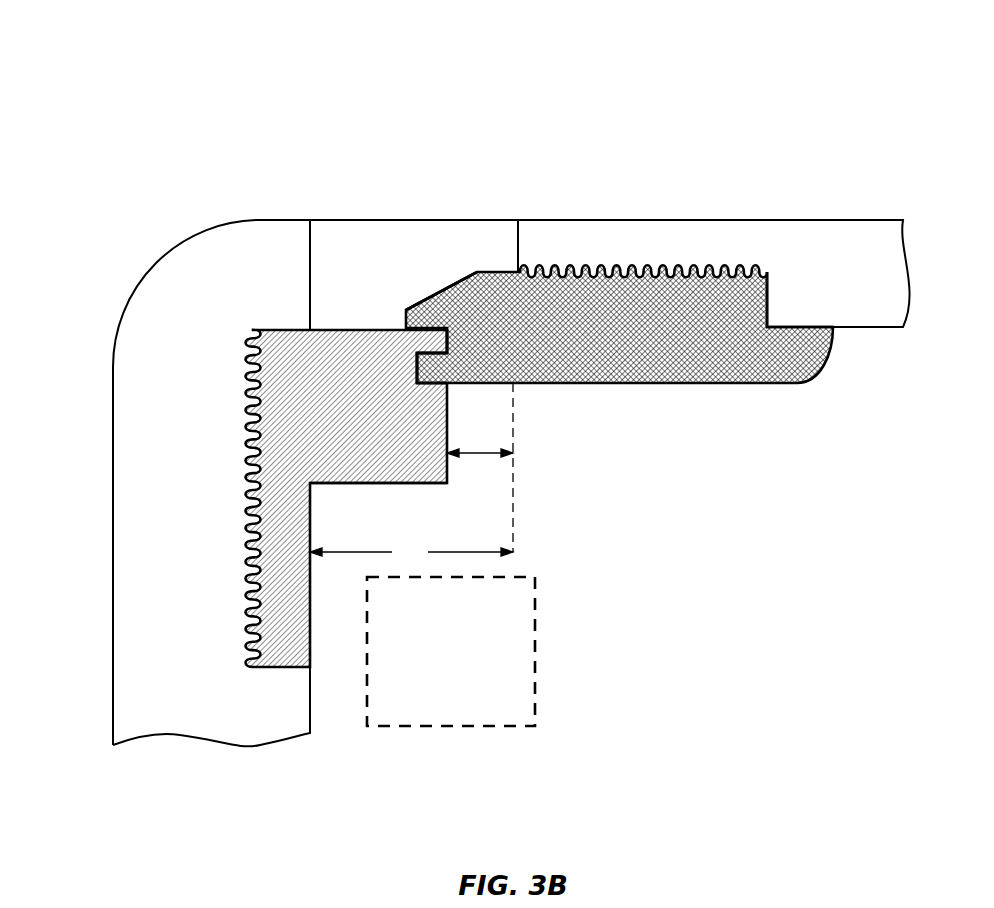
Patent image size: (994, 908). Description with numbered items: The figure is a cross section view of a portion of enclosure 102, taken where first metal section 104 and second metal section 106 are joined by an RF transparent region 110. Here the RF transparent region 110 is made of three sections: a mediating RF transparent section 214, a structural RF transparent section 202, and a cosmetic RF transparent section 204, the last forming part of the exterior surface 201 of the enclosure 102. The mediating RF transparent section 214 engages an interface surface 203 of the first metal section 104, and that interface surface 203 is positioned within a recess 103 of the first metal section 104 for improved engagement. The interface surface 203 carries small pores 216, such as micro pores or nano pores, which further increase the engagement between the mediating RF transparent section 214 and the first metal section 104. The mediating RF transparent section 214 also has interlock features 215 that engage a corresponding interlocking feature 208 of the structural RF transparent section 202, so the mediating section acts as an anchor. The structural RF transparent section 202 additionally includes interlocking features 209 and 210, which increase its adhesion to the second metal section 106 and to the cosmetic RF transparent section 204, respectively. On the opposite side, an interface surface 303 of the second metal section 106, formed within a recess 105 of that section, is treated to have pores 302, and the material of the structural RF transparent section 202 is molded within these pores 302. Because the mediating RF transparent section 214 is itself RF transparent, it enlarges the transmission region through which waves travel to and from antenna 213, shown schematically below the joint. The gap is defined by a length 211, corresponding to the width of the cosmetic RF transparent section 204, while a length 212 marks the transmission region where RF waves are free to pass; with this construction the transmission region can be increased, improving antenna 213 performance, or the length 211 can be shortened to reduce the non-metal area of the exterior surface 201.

The enclosure 102 is at (266, 80).
The exterior surface 201 is at (128, 226).
The first metal section 104 is at (113, 490).
The second metal section 106 is at (698, 220).
The cosmetic RF transparent section 204 is at (474, 221).
The RF transparent region 110 is at (438, 302).
The recess 105 is at (762, 257).
The structural RF transparent section 202 is at (645, 385).
The interlocking feature 210 is at (412, 318).
The interlocking feature 208 is at (422, 374).
The interlocking feature 209 is at (765, 309).
The interface surface 303 is at (570, 273).
The pores 302 is at (636, 273).
The recess 103 is at (232, 349).
The interface surface 203 is at (253, 378).
The pores 216 is at (253, 580).
The interlock features 215 is at (420, 343).
The mediating RF transparent section 214 is at (338, 484).
The length 212 is at (480, 456).
The length 211 is at (411, 552).
The antenna 213 is at (437, 662).